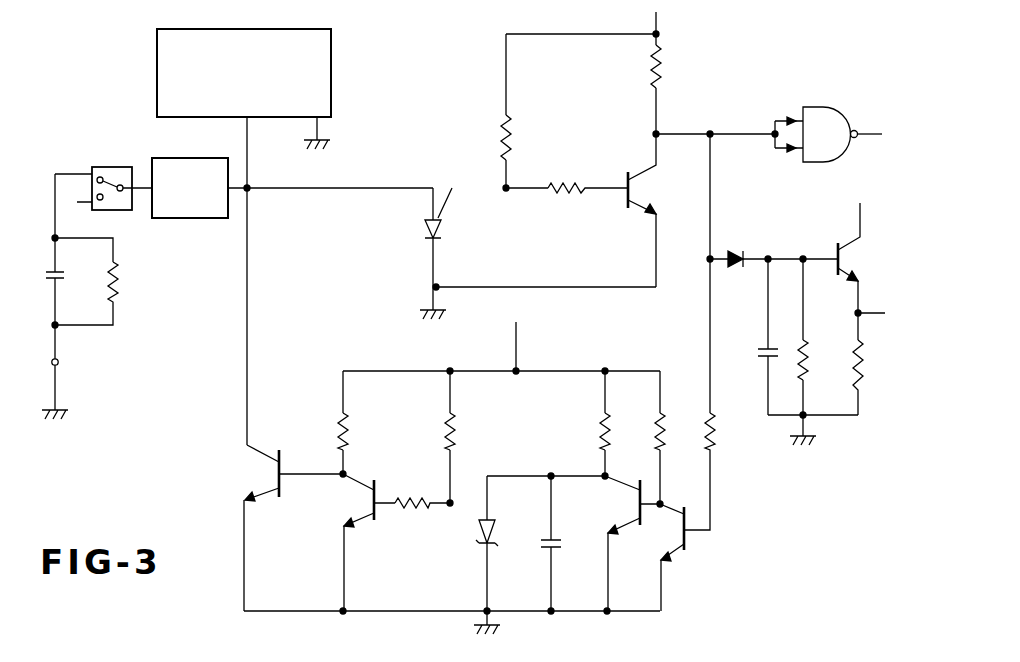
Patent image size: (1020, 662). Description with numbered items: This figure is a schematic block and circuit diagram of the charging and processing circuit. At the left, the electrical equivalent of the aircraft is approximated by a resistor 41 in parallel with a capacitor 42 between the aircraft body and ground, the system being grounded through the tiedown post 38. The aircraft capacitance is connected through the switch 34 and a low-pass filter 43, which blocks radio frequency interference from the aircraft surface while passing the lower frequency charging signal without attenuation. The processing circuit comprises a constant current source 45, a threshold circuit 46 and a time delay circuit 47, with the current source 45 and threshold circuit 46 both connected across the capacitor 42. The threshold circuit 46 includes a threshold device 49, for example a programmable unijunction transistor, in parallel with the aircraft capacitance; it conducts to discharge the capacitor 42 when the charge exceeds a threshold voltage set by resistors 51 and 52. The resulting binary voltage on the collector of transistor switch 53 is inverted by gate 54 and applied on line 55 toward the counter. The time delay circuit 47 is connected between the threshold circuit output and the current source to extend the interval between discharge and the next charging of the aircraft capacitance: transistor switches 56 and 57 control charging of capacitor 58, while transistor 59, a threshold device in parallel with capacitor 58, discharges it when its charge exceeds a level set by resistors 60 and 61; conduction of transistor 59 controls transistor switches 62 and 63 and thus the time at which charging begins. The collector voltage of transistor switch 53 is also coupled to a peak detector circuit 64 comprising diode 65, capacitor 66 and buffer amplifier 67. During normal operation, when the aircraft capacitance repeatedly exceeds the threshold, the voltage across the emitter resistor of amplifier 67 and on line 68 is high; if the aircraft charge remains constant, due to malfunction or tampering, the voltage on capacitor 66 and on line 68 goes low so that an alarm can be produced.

The switch 34 is at (112, 167).
The tiedown post 38 is at (60, 366).
The resistor 41 is at (122, 290).
The capacitor 42 is at (47, 278).
The low-pass filter 43 is at (172, 220).
The constant current source 45 is at (333, 45).
The threshold circuit 46 is at (724, 85).
The time delay circuit 47 is at (645, 346).
The threshold device 49 is at (448, 232).
The resistor 51 is at (508, 140).
The resistor 52 is at (573, 188).
The transistor switch 53 is at (643, 190).
The gate 54 is at (823, 107).
The line 55 is at (865, 136).
The transistor switch 56 is at (685, 546).
The transistor switch 57 is at (628, 500).
The capacitor 58 is at (545, 541).
The transistor 59 is at (478, 533).
The resistor 60 is at (443, 428).
The resistor 61 is at (417, 510).
The transistor switch 62 is at (357, 498).
The transistor switch 63 is at (250, 448).
The peak detector circuit 64 is at (797, 213).
The diode 65 is at (735, 250).
The capacitor 66 is at (760, 351).
The buffer amplifier 67 is at (840, 270).
The line 68 is at (870, 318).